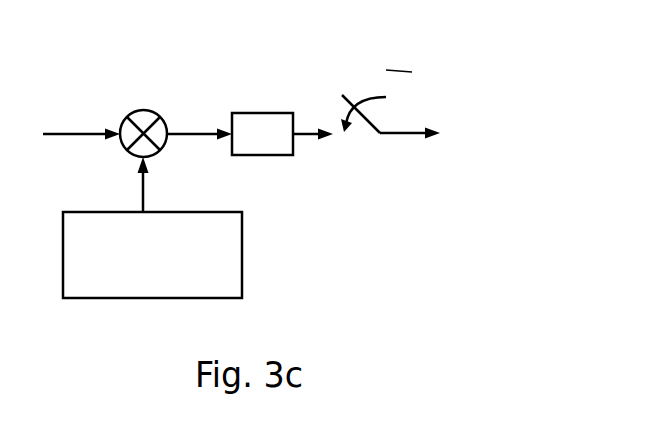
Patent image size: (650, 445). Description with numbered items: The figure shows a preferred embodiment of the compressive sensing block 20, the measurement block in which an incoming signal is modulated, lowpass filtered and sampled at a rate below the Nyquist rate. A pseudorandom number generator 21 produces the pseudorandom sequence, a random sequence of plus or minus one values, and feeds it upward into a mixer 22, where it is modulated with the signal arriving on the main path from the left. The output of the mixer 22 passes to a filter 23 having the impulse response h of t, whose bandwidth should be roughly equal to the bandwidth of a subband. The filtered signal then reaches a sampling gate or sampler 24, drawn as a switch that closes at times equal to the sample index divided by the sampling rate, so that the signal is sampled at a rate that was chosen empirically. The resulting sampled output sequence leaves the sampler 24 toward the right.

The compressive sensing block 20 is at (368, 240).
The pseudorandom number generator 21 is at (242, 247).
The mixer 22 is at (144, 108).
The filter 23 is at (272, 113).
The sampling gate or sampler 24 is at (363, 138).